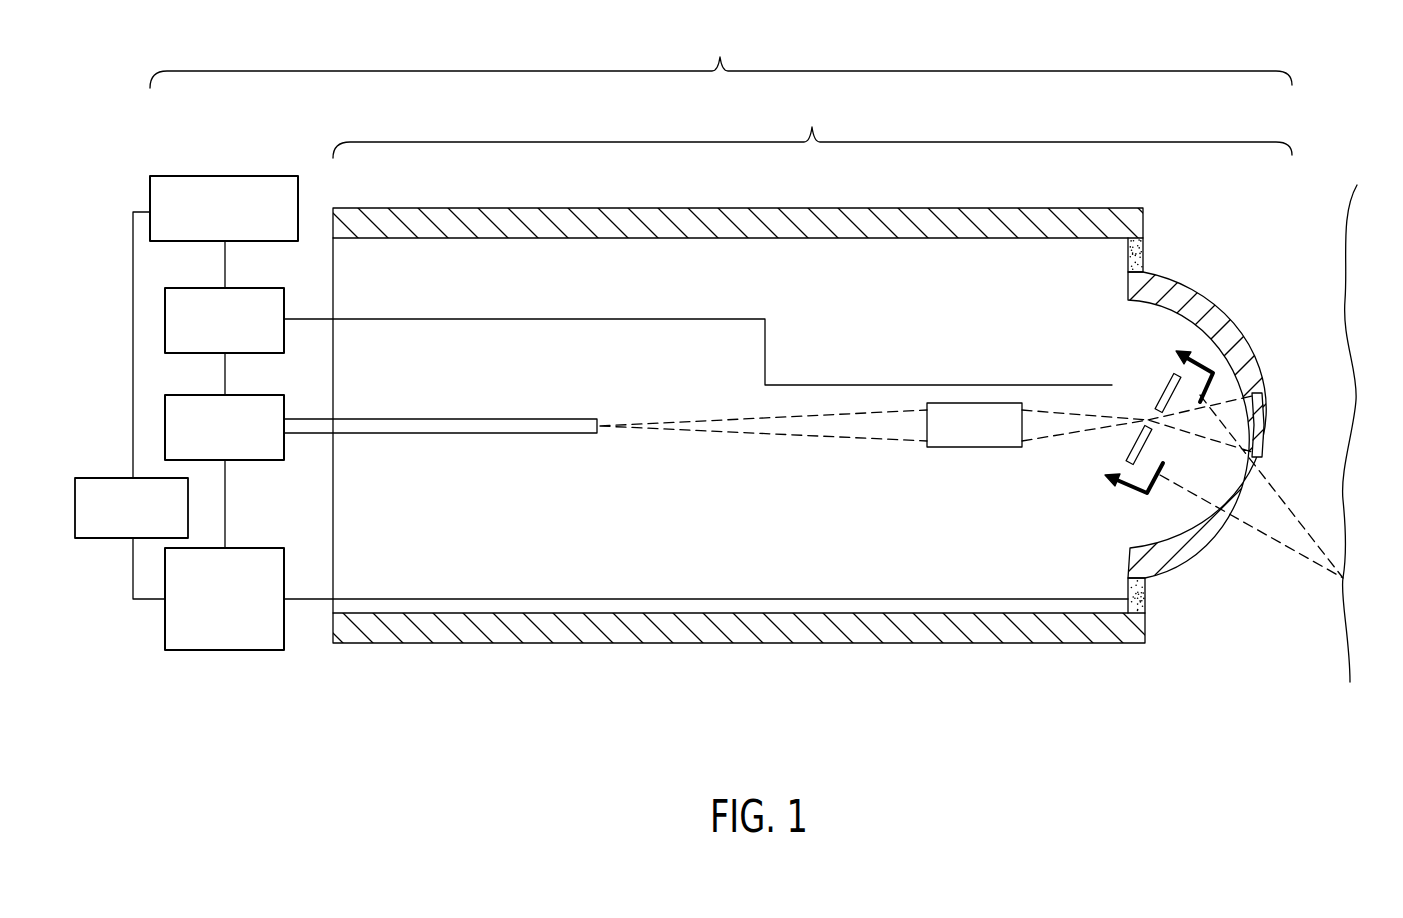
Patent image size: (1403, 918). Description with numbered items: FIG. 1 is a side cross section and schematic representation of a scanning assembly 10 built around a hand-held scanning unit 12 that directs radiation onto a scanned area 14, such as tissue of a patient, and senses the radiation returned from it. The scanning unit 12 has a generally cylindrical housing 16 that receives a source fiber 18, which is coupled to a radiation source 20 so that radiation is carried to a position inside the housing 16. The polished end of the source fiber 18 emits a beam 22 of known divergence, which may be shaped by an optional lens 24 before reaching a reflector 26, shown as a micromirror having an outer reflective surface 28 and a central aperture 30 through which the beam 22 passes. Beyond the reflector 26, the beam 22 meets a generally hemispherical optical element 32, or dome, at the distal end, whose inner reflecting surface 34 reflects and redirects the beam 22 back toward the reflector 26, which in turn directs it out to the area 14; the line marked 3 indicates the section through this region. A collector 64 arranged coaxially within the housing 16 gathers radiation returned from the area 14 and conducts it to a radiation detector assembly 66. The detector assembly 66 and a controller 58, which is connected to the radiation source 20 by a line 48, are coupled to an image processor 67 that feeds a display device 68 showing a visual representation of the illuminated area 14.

The scanning assembly 10 is at (721, 58).
The scanning unit 12 is at (812, 128).
The scanned area 14 is at (1347, 580).
The housing 16 is at (622, 216).
The source fiber 18 is at (480, 419).
The radiation source 20 is at (262, 460).
The beam 22 is at (764, 433).
The lens 24 is at (948, 447).
The reflector 26 is at (1133, 452).
The outer reflective surface 28 is at (1150, 440).
The central aperture 30 is at (1138, 403).
The optical element 32 is at (1196, 294).
The reflecting surface 34 is at (1265, 397).
The control line 48 is at (480, 318).
The controller 58 is at (253, 288).
The collector 64 is at (1147, 598).
The radiation detector assembly 66 is at (205, 650).
The image processor 67 is at (82, 539).
The display device 68 is at (225, 176).
The section line for FIG. 3 is at (1142, 410).